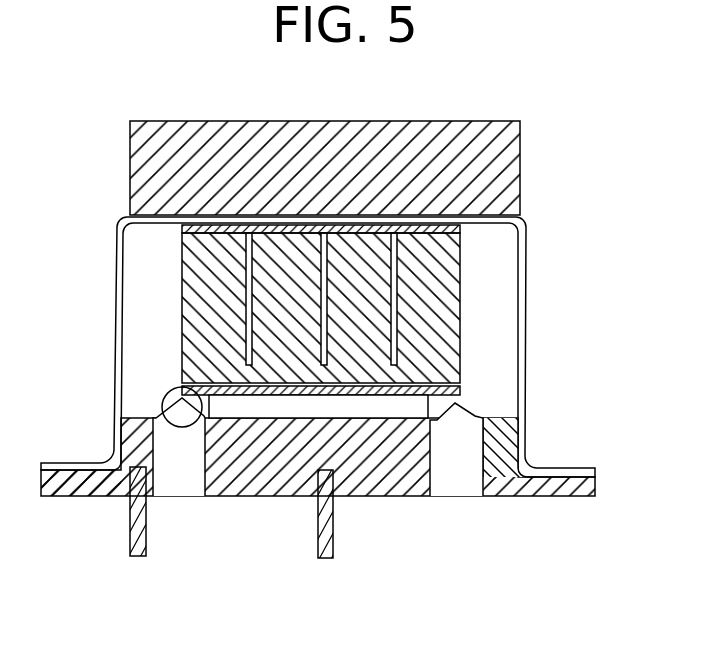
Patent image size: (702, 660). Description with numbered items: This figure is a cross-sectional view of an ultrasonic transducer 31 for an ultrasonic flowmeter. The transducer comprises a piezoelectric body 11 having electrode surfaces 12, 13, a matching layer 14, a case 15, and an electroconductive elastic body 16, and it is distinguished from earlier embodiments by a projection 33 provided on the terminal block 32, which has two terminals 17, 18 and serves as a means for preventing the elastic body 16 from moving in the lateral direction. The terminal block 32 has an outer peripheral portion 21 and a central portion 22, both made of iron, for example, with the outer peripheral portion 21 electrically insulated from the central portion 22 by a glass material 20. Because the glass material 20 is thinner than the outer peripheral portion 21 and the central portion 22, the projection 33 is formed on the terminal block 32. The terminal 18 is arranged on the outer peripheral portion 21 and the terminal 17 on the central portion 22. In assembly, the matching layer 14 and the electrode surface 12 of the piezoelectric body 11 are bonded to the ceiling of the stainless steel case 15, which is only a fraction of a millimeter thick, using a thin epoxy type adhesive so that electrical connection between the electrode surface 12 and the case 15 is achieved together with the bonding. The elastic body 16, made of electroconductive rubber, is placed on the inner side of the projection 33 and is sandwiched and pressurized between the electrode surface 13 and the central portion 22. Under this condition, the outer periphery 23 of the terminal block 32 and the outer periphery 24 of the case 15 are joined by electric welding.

The piezoelectric body 11 is at (438, 333).
The electrode surface 12 is at (455, 230).
The electrode surface 13 is at (457, 393).
The matching layer 14 is at (502, 178).
The case 15 is at (525, 285).
The electroconductive elastic body 16 is at (413, 408).
The terminal 17 is at (323, 560).
The terminal 18 is at (138, 558).
The glass material 20 is at (177, 485).
The outer peripheral portion 21 is at (521, 492).
The central portion 22 is at (242, 497).
The outer periphery 23 is at (69, 478).
The outer periphery 24 is at (64, 462).
The ultrasonic transducer 31 is at (116, 220).
The terminal block 32 is at (597, 490).
The projection 33 is at (164, 391).